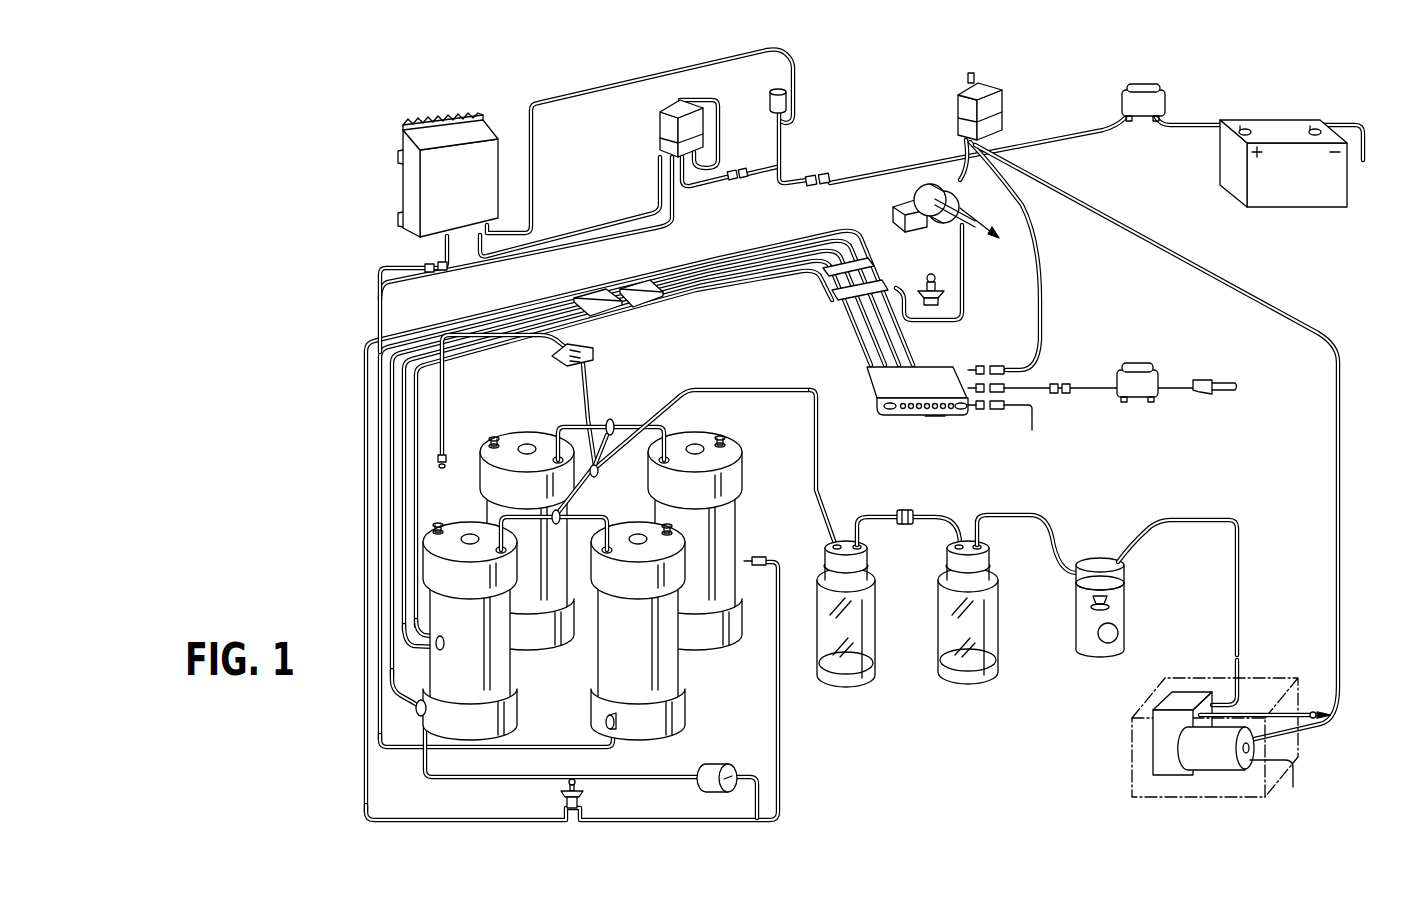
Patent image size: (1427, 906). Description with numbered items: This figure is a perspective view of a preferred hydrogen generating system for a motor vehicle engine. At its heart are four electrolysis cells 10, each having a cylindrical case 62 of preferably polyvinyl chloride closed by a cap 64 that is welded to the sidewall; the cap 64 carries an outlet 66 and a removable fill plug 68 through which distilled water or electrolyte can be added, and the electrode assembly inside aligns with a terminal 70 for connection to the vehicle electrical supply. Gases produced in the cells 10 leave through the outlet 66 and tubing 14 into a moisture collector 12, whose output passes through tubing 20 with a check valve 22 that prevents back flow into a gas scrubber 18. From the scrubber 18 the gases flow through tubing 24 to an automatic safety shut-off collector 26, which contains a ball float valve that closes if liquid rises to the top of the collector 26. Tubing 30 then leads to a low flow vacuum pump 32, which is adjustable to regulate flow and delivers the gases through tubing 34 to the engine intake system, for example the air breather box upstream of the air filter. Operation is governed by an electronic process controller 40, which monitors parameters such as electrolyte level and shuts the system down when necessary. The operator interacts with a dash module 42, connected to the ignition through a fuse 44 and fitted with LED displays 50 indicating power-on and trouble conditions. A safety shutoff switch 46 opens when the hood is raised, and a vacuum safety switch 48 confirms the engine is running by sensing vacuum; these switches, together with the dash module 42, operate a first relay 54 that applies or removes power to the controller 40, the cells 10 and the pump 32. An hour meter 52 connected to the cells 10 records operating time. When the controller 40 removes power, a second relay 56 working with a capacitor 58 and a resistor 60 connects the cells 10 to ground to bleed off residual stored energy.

The electrolysis cell 10 is at (755, 523).
The moisture collector 12 is at (850, 672).
The tubing 14 is at (822, 476).
The gas scrubber 18 is at (968, 676).
The tubing 20 is at (950, 515).
The check valve 22 is at (908, 526).
The tubing 24 is at (1038, 513).
The automatic safety shut-off collector 26 is at (1085, 653).
The tubing 30 is at (1192, 518).
The low flow vacuum pump 32 is at (1218, 785).
The tubing 34 is at (1312, 712).
The electronic process controller 40 is at (410, 197).
The dash module 42 is at (880, 378).
The fuse 44 is at (1150, 362).
The safety shutoff switch 46 is at (945, 283).
The vacuum safety switch 48 is at (903, 186).
The LED display 50 is at (935, 416).
The hour meter 52 is at (735, 764).
The first relay 54 is at (985, 92).
The second relay 56 is at (662, 122).
The capacitor 58 is at (790, 100).
The resistor 60 is at (740, 180).
The case 62 is at (670, 661).
The cap 64 is at (611, 430).
The outlet 66 is at (677, 418).
The fill plug 68 is at (724, 443).
The terminal 70 is at (616, 731).